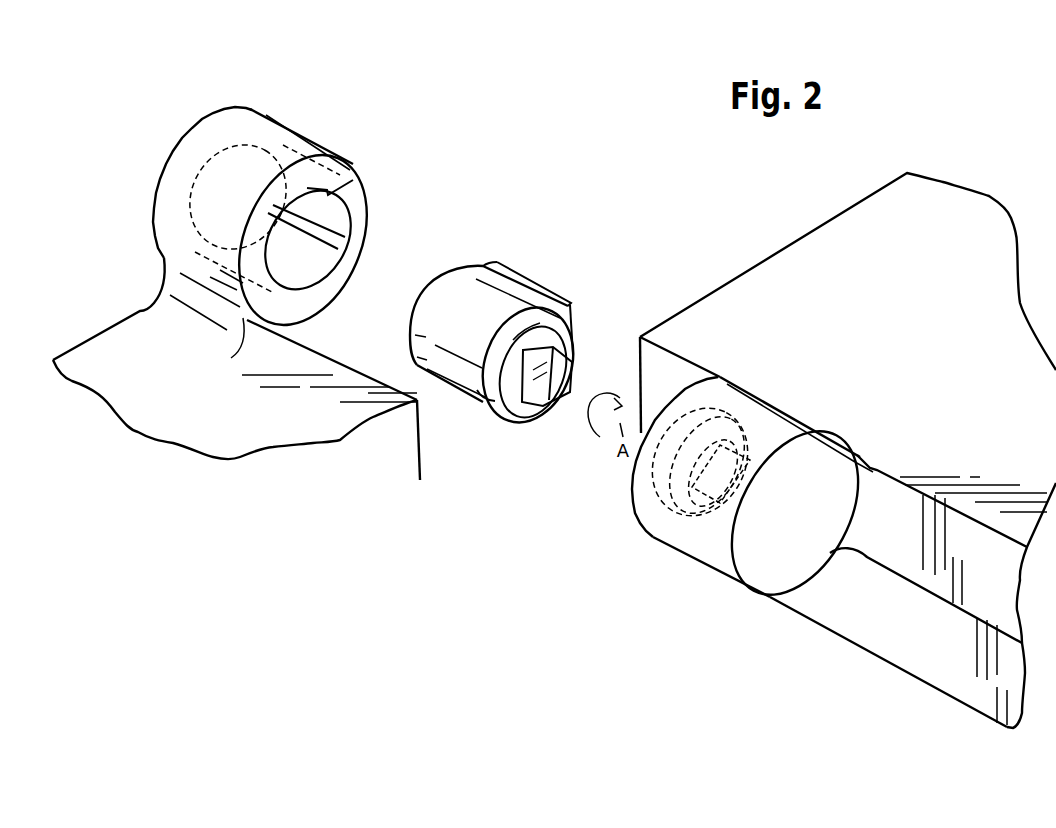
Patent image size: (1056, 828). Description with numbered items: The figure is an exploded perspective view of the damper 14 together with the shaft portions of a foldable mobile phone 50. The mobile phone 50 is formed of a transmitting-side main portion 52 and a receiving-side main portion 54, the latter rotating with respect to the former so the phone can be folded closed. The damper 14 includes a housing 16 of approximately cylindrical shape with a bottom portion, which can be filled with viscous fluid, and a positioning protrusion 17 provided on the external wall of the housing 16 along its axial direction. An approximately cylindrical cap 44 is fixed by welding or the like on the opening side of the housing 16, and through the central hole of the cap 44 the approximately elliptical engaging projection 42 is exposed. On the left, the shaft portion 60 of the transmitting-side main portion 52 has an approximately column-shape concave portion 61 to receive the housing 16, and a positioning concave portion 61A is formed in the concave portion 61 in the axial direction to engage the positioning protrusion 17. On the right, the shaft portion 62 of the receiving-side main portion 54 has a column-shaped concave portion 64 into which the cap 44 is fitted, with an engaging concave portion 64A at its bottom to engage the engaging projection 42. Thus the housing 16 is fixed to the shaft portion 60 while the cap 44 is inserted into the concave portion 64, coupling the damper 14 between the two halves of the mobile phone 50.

The mobile phone 50 is at (463, 82).
The transmitting-side main portion 52 is at (180, 433).
The shaft portion 60 is at (267, 127).
The concave portion 61 is at (313, 252).
The positioning concave portion 61A is at (340, 227).
The damper 14 is at (513, 257).
The housing 16 is at (460, 283).
The positioning protrusion 17 is at (537, 295).
The cap 44 is at (490, 390).
The engaging projection 42 is at (566, 395).
The receiving-side main portion 54 is at (750, 287).
The shaft portion 62 is at (758, 407).
The column-shaped concave portion 64 is at (663, 485).
The engaging concave portion 64A is at (692, 480).